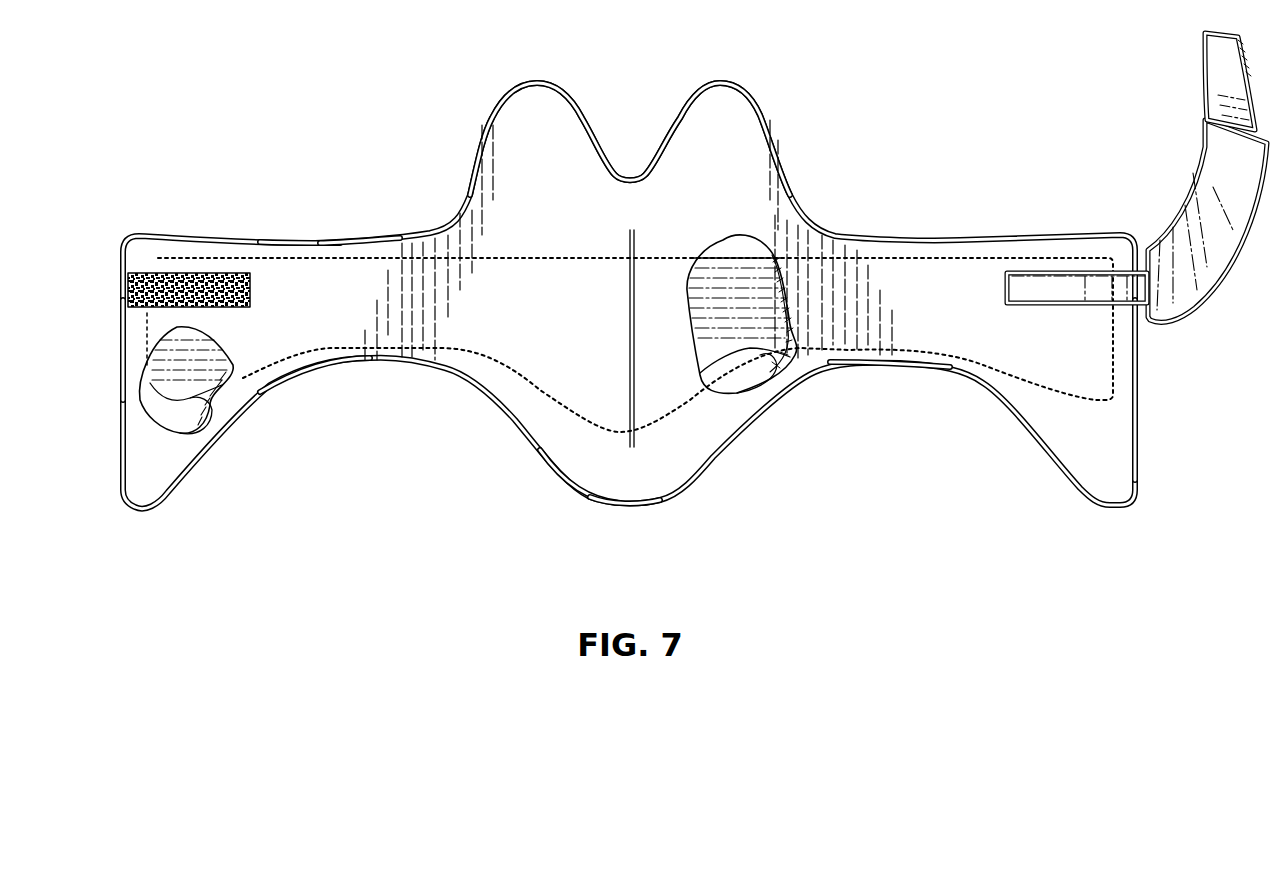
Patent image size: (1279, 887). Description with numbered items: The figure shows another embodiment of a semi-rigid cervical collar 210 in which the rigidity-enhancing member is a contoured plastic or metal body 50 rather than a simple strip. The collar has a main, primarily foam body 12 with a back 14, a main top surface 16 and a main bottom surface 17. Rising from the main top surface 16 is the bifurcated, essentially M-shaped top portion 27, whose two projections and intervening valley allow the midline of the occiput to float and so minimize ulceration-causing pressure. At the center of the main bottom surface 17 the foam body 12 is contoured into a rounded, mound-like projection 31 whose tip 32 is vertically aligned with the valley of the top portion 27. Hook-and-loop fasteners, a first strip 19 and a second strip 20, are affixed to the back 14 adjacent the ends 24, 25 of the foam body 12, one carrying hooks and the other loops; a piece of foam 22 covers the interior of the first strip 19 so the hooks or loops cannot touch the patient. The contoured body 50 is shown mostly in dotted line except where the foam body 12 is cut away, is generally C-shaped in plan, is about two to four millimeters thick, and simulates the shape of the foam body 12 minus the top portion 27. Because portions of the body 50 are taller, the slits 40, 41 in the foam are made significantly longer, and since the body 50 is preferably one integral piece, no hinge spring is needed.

The cervical collar 210 is at (447, 118).
The bifurcated top portion 27 is at (583, 83).
The foam body 12 is at (303, 250).
The main top surface 16 is at (343, 240).
The second strip 20 is at (153, 277).
The end 24 is at (120, 358).
The end 25 is at (1137, 397).
The back 14 is at (303, 367).
The main bottom surface 17 is at (870, 360).
The projection 31 is at (577, 447).
The tip 32 is at (617, 507).
The slit 40 is at (637, 390).
The contoured body 50 is at (163, 385).
The slit 41 is at (187, 427).
The piece of foam 22 is at (1193, 197).
The first strip 19 is at (1210, 62).